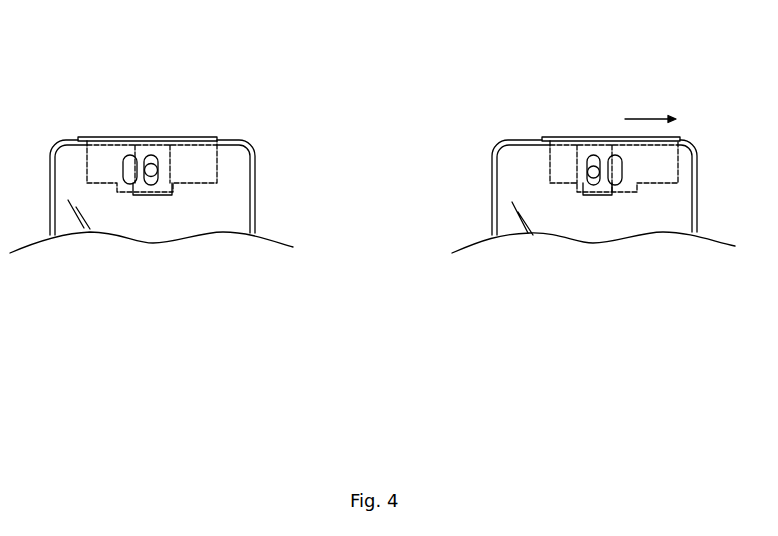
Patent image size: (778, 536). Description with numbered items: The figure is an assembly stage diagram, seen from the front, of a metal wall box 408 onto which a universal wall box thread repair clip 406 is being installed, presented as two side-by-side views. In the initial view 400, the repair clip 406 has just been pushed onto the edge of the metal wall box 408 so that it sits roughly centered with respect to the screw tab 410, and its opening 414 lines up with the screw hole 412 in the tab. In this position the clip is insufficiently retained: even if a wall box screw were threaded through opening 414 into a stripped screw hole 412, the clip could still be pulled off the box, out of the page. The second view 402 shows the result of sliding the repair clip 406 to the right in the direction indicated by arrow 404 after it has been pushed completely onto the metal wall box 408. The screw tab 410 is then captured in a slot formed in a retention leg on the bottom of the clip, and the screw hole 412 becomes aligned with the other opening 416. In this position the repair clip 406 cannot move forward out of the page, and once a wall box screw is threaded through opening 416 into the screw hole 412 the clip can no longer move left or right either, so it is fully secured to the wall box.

The initial view 400 is at (307, 43).
The view 402 is at (748, 43).
The arrow 404 is at (650, 118).
The universal wall box thread repair clip 406 is at (128, 138).
The metal wall box 408 is at (75, 140).
The screw tab 410 is at (153, 195).
The screw hole 412 is at (150, 160).
The opening 414 is at (157, 169).
The opening 416 is at (135, 158).